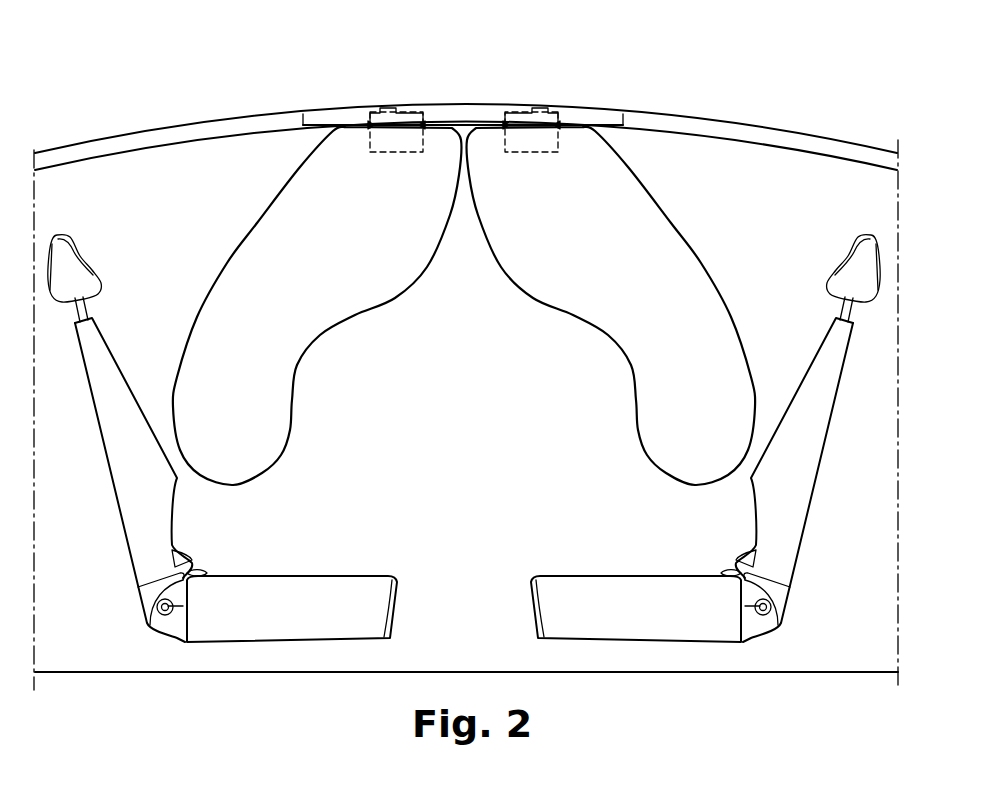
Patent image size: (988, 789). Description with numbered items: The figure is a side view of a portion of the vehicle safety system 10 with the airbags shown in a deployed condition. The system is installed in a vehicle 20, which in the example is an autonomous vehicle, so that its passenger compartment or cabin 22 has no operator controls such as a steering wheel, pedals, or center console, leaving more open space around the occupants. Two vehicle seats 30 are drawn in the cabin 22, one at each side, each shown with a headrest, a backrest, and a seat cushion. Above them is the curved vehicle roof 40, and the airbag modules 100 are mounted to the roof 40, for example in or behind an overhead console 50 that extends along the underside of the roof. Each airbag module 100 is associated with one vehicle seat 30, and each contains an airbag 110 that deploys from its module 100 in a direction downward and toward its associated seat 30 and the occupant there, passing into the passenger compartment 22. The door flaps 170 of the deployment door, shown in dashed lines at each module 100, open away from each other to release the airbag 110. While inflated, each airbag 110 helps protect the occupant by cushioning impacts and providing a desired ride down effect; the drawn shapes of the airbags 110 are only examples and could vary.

The vehicle safety system 10 is at (303, 83).
The vehicle 20 is at (157, 73).
The passenger compartment or cabin 22 is at (150, 183).
The vehicle seat 30 is at (107, 375).
The vehicle roof 40 is at (720, 128).
The overhead console 50 is at (612, 120).
The airbag module 100 is at (397, 108).
The airbag 110 is at (270, 250).
The door flap 170 is at (400, 147).